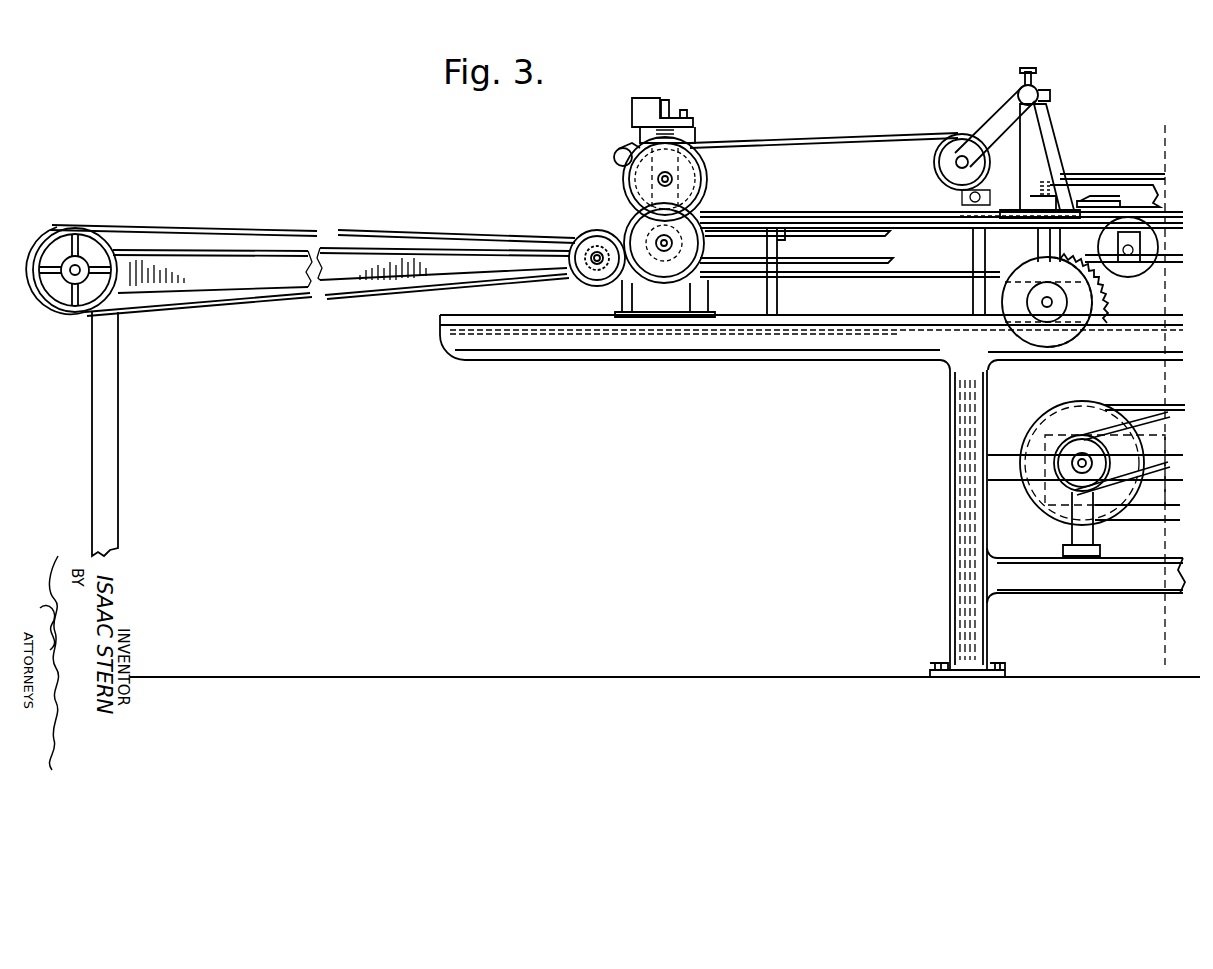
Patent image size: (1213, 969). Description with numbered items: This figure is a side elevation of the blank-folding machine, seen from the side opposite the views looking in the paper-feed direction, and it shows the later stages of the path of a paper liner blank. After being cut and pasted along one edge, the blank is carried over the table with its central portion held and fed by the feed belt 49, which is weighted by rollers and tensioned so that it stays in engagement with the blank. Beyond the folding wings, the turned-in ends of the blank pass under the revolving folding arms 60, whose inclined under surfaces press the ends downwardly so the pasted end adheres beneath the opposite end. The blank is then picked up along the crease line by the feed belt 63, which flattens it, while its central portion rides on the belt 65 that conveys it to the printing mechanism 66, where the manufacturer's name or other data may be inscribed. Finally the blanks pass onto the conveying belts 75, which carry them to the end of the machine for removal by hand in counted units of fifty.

The conveying belts 75 is at (420, 236).
The printing mechanism 66 is at (612, 152).
The feed belt 63 is at (752, 212).
The belt 65 is at (800, 160).
The feed belt 49 is at (1075, 176).
The revolving folding arms 60 is at (1090, 200).